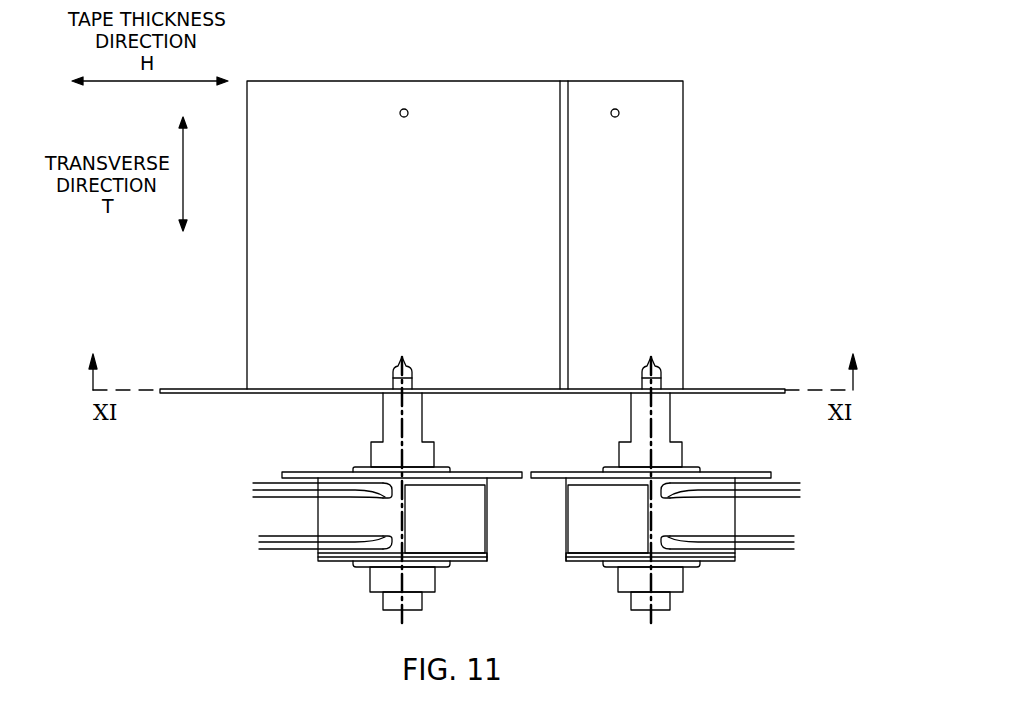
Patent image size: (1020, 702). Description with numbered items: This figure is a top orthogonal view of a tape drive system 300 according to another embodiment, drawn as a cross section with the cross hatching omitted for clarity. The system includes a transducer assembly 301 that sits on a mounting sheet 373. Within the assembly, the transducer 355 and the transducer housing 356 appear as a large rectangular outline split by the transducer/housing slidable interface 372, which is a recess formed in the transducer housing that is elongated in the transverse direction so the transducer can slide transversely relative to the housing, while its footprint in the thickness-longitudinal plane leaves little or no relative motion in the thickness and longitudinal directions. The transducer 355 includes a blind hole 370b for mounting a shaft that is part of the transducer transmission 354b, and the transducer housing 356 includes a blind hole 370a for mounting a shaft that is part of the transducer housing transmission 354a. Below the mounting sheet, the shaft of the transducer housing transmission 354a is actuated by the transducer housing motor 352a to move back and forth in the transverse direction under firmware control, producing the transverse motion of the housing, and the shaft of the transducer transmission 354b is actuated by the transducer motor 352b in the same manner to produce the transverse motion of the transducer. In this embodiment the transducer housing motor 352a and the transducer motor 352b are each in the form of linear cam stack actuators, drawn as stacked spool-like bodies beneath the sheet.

The tape drive system 300 is at (745, 18).
The transducer assembly 301 is at (722, 102).
The transducer 355 is at (404, 109).
The transducer housing 356 is at (615, 109).
The transducer/housing slidable interface 372 is at (566, 80).
The mounting sheet 373 is at (181, 388).
The blind hole 370a is at (641, 376).
The blind hole 370b is at (412, 376).
The transducer housing transmission 354a is at (660, 375).
The transducer transmission 354b is at (393, 375).
The transducer housing motor 352a is at (585, 558).
The transducer motor 352b is at (468, 558).